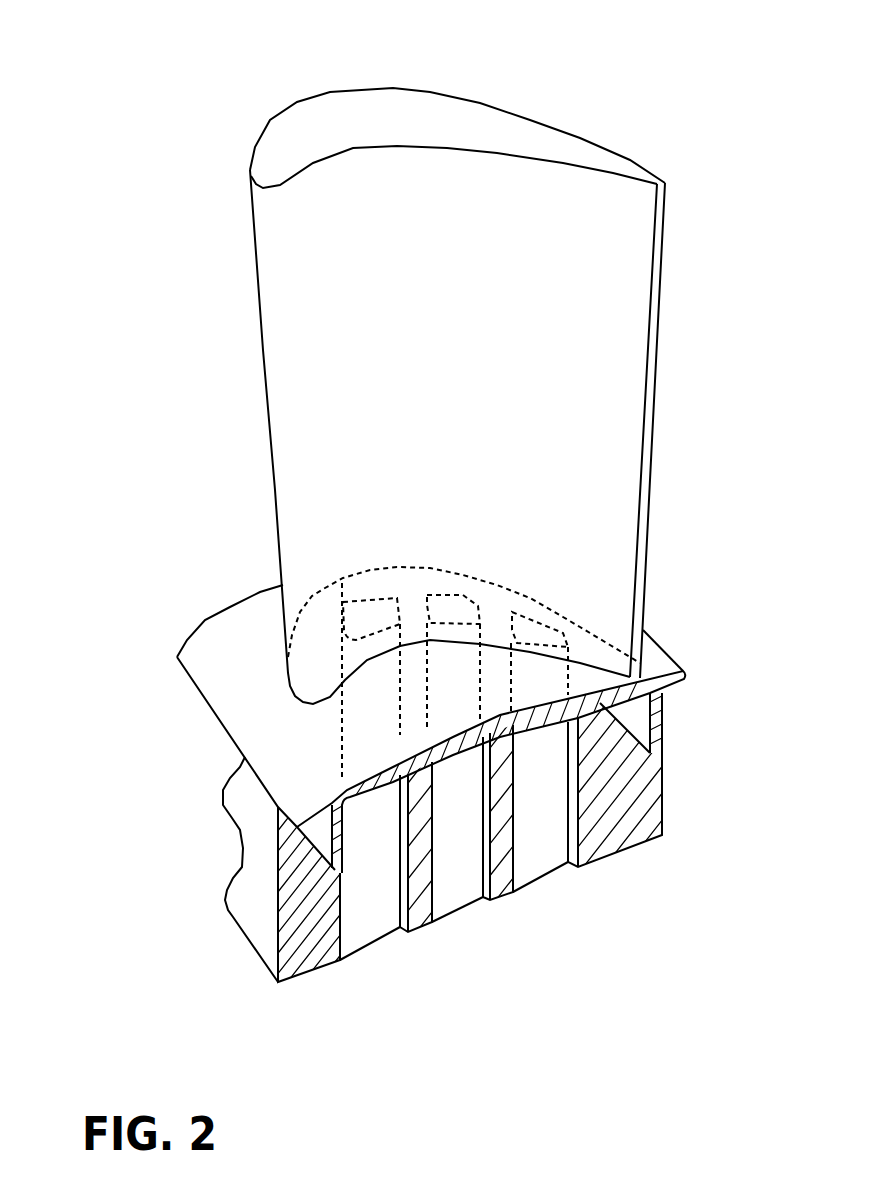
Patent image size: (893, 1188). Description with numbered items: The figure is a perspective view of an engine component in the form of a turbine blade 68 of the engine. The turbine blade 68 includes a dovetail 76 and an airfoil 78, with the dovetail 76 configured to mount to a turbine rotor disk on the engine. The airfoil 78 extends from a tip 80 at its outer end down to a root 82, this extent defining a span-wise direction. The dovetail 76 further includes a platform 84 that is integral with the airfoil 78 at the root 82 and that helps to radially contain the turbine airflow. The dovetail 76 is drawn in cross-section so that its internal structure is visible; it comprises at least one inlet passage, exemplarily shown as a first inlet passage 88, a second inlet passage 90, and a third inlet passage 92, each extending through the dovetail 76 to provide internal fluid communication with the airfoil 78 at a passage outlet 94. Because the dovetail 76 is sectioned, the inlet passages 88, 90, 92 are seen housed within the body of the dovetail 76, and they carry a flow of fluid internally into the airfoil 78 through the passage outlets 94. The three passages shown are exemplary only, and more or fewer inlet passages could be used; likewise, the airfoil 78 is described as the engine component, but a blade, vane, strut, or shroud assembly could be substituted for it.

The turbine blade 68 is at (105, 190).
The dovetail 76 is at (265, 858).
The airfoil 78 is at (262, 470).
The tip 80 is at (342, 130).
The root 82 is at (593, 660).
The platform 84 is at (243, 692).
The first inlet passage 88 is at (378, 965).
The second inlet passage 90 is at (462, 942).
The third inlet passage 92 is at (539, 908).
The passage outlet 94 is at (343, 583).